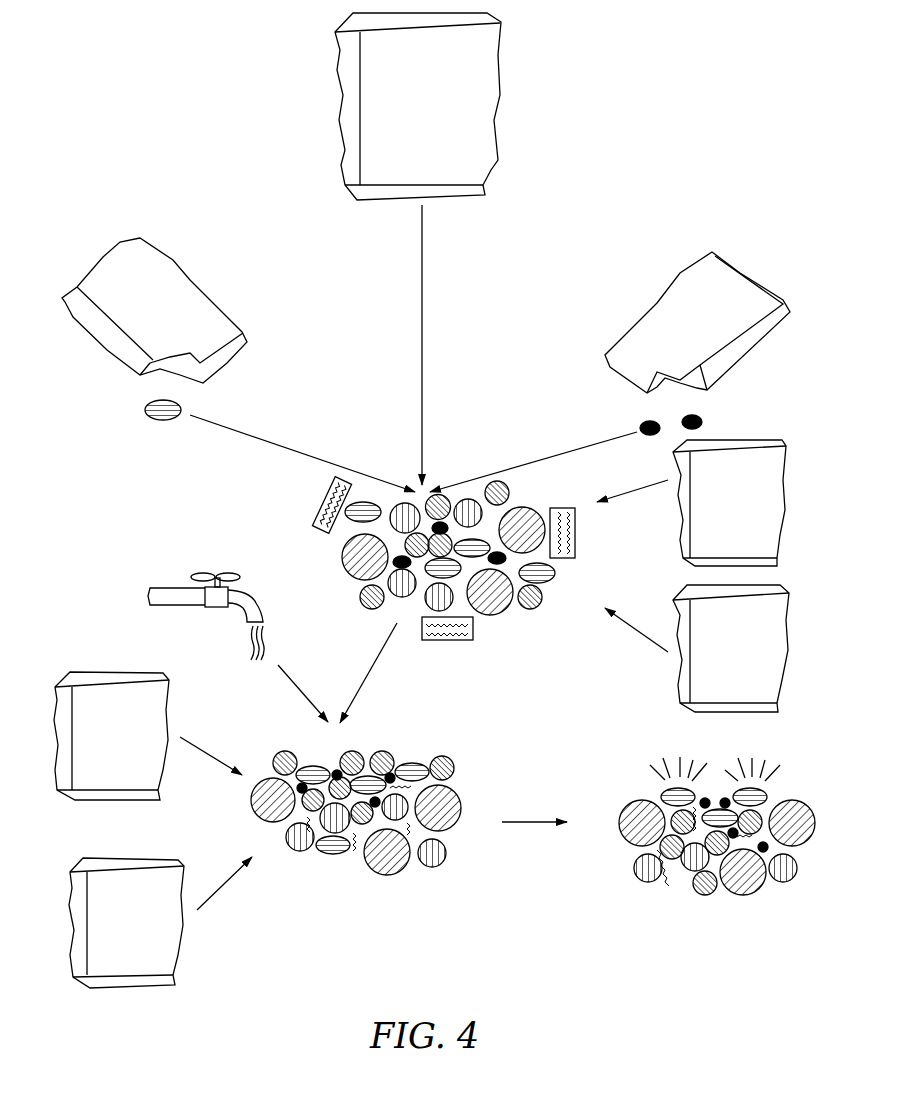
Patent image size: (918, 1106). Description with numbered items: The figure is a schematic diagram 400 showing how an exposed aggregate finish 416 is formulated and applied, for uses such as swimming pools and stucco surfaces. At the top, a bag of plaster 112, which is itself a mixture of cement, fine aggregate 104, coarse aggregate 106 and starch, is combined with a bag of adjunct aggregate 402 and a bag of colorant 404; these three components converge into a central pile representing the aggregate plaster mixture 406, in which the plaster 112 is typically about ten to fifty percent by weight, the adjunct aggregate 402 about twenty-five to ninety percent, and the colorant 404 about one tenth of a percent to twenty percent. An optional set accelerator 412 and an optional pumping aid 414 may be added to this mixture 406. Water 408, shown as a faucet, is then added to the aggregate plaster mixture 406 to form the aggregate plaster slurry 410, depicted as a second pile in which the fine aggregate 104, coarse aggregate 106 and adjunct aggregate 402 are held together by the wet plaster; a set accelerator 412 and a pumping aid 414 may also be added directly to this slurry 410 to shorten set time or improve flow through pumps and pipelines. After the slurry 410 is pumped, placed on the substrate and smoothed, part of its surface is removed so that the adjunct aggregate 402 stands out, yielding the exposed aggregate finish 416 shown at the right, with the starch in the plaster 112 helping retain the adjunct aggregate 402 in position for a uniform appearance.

The schematic diagram 400 is at (646, 50).
The plaster 112 is at (497, 100).
The adjunct aggregate 402 is at (107, 257).
The colorant 404 is at (747, 263).
The aggregate plaster mixture 406 is at (580, 545).
The water 408 is at (177, 588).
The aggregate plaster slurry 410 is at (352, 858).
The set accelerator 412 is at (783, 677).
The pumping aid 414 is at (787, 463).
The fine aggregate 104 is at (300, 766).
The coarse aggregate 106 is at (458, 824).
The exposed aggregate finish 416 is at (622, 861).